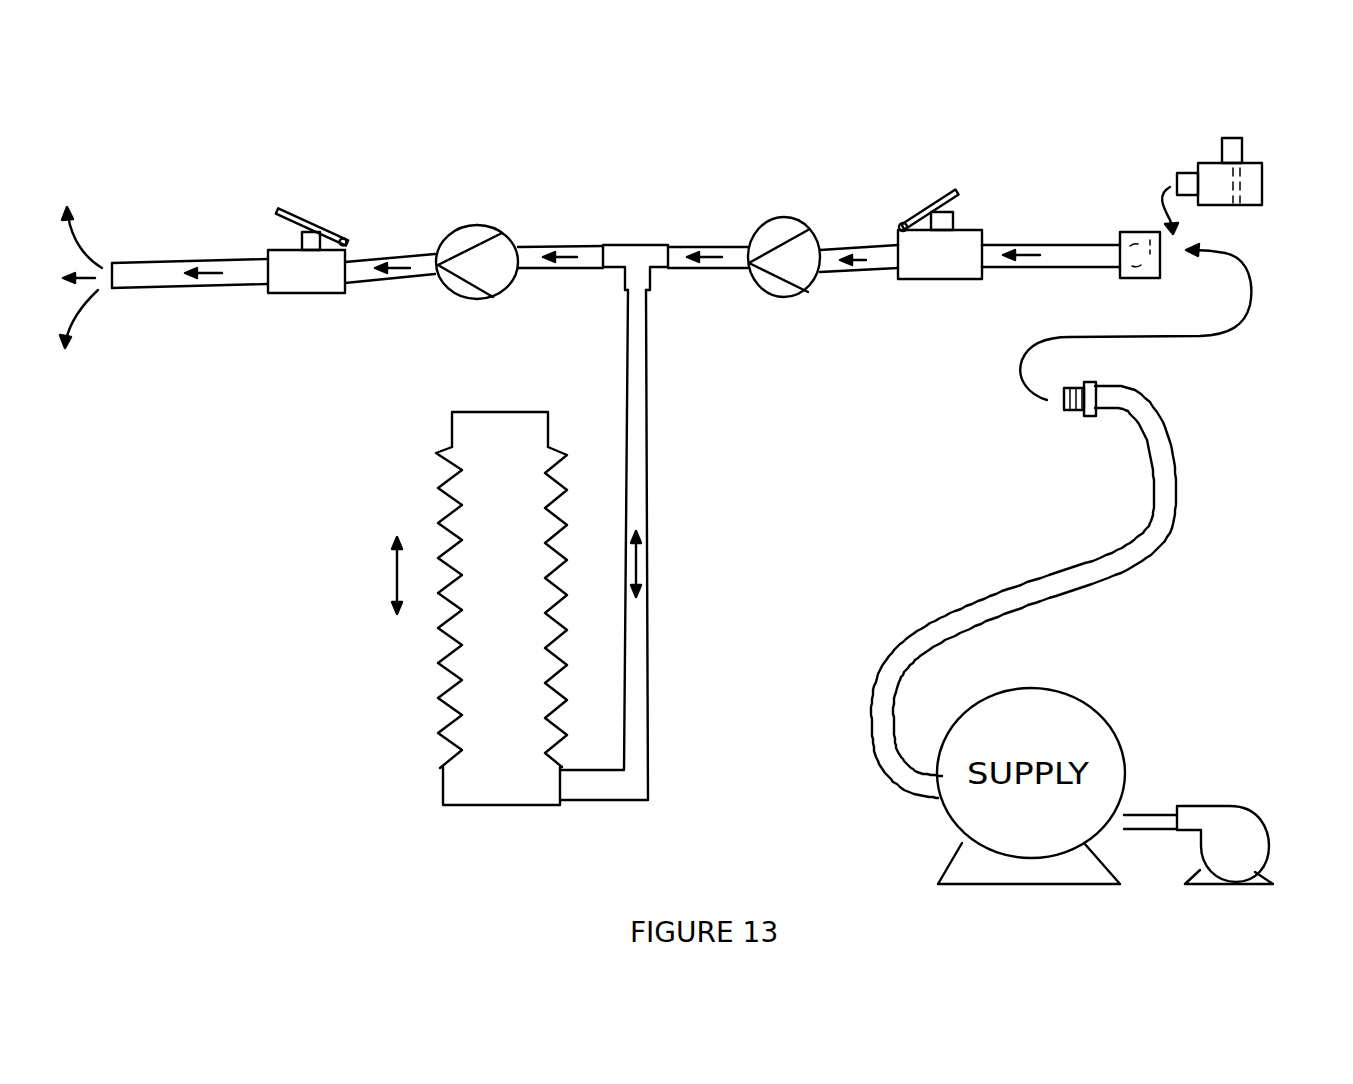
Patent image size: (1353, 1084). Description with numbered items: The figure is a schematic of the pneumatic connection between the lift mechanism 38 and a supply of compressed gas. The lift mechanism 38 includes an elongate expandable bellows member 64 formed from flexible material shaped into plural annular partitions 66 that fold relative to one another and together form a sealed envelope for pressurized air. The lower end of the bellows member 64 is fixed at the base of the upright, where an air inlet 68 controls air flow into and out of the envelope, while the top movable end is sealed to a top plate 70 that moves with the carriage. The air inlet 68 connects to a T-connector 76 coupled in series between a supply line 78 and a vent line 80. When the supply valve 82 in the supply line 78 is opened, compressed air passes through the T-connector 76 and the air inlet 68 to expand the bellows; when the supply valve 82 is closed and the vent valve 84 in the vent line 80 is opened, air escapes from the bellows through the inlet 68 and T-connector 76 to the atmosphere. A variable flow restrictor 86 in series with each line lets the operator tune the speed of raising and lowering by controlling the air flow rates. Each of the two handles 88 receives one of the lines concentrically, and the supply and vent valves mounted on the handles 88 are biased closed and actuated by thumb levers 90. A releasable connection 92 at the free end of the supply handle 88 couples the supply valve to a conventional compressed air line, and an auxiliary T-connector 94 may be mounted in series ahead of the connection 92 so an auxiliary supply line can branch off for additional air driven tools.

The lift mechanism 38 is at (356, 689).
The expandable bellows member 64 is at (442, 720).
The annular partitions 66 is at (450, 492).
The air inlet 68 is at (580, 791).
The top plate 70 is at (486, 413).
The T-connector 76 is at (642, 246).
The supply line 78 is at (1057, 261).
The vent line 80 is at (153, 277).
The supply valve 82 is at (932, 253).
The vent valve 84 is at (320, 265).
The variable flow restrictor 86 is at (462, 298).
The handles 88 is at (228, 287).
The thumb levers 90 is at (300, 213).
The releasable connection 92 is at (1137, 232).
The auxiliary T-connector 94 is at (1237, 207).